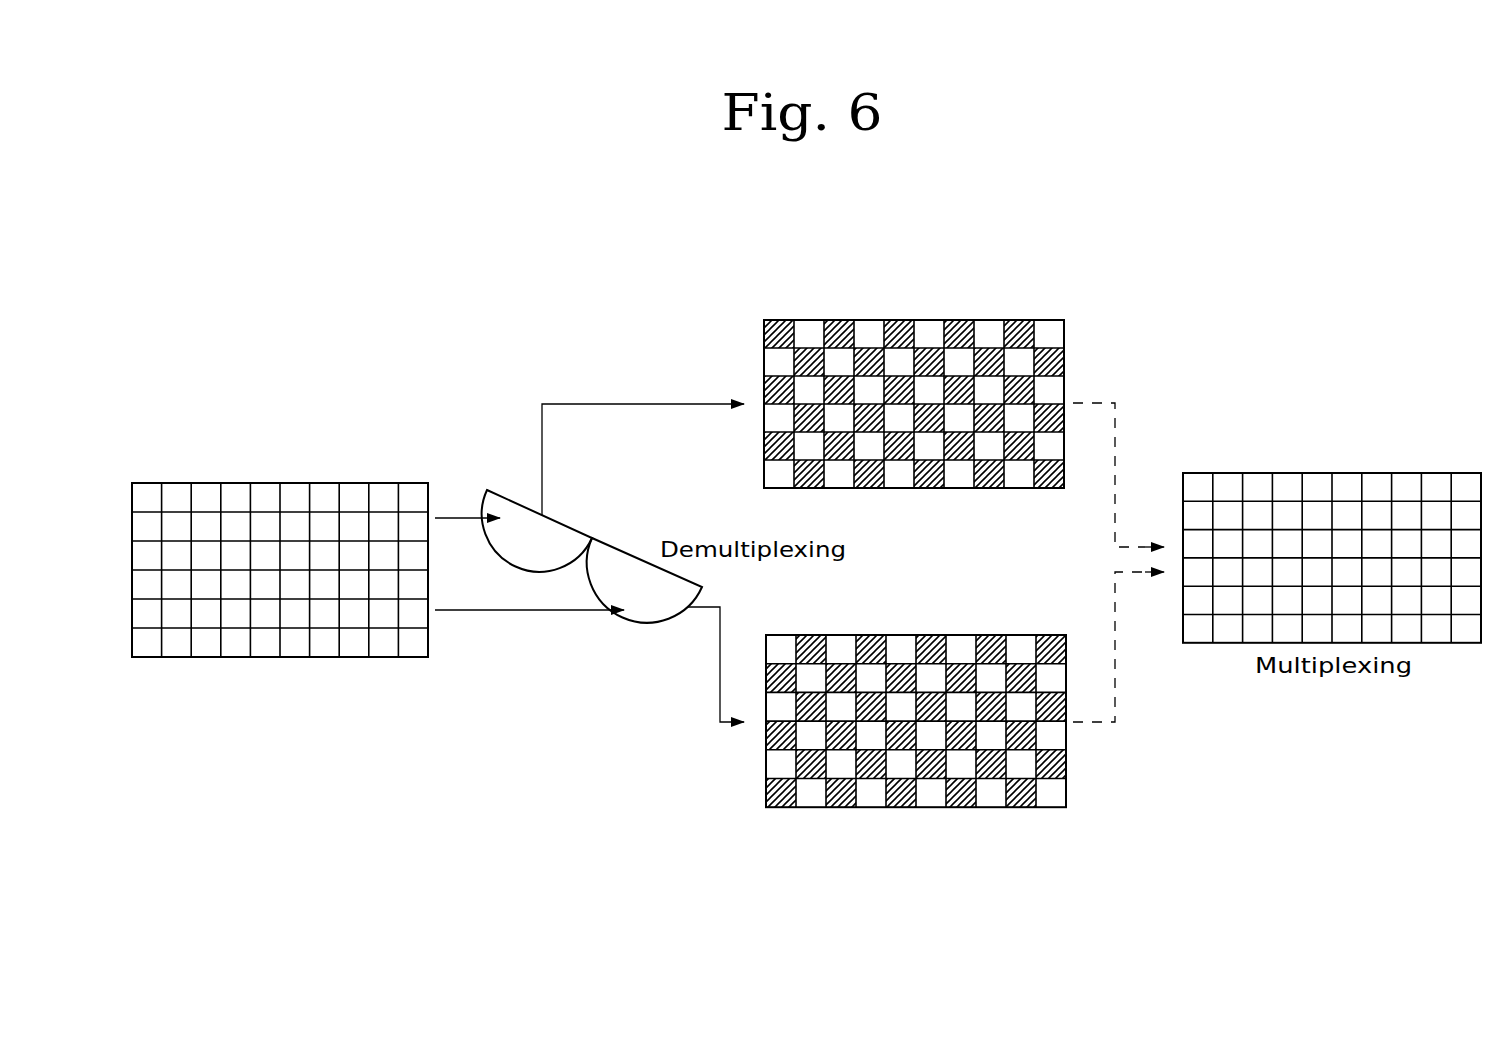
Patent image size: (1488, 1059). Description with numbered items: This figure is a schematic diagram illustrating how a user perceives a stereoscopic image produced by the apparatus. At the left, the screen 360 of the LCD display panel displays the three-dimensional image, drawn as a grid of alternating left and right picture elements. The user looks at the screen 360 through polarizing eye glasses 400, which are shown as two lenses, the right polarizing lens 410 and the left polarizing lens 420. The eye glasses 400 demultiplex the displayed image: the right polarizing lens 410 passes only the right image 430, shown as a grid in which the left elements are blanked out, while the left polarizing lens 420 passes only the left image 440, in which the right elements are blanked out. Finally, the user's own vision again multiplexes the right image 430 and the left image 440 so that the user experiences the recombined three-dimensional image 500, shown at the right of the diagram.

The screen 360 is at (178, 473).
The polarizing eye glasses 400 is at (564, 562).
The right polarizing lens 410 is at (550, 530).
The left polarizing lens 420 is at (647, 618).
The right image 430 is at (787, 308).
The left image 440 is at (797, 820).
The multiplexed 3D image 500 is at (1345, 450).